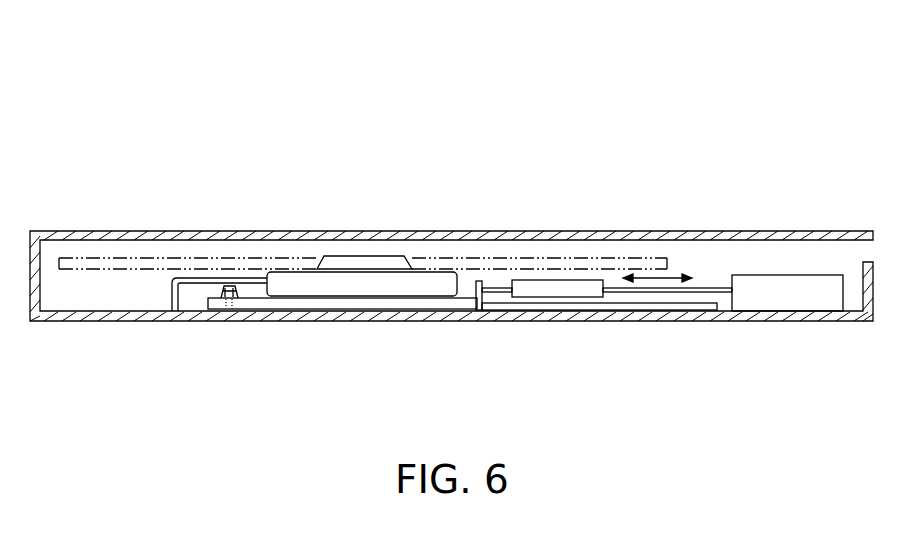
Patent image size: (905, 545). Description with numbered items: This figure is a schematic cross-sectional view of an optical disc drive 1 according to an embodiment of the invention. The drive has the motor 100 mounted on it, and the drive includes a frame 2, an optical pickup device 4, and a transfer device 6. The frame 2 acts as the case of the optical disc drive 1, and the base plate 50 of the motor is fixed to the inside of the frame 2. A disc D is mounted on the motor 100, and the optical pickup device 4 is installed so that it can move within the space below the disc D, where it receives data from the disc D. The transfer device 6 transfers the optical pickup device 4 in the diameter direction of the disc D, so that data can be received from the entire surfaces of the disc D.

The optical disc drive 1 is at (451, 224).
The frame 2 is at (112, 318).
The motor 100 is at (367, 256).
The disc D is at (527, 262).
The base plate 50 is at (388, 302).
The optical pickup device 4 is at (548, 297).
The transfer device 6 is at (703, 287).